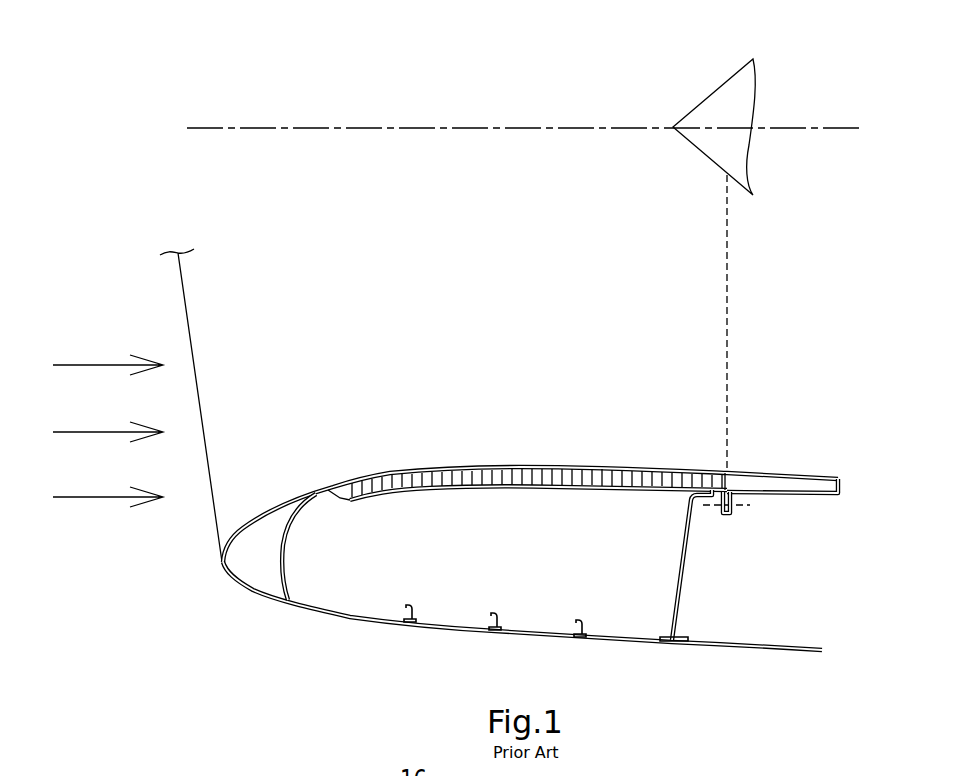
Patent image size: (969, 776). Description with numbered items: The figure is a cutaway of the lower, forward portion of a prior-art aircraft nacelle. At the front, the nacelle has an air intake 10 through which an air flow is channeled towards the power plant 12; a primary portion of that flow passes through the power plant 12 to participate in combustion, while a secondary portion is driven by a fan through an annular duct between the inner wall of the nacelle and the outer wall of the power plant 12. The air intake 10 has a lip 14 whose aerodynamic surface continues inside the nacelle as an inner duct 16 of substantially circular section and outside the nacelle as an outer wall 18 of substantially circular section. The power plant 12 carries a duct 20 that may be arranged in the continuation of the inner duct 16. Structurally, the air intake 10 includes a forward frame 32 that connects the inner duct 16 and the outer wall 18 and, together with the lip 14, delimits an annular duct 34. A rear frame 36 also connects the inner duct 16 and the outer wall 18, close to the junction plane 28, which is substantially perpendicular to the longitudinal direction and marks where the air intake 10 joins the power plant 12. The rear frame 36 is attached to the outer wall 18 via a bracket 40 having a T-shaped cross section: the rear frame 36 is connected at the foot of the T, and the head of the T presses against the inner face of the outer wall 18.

The air intake 10 is at (262, 108).
The power plant 12 is at (694, 97).
The lip 14 is at (209, 569).
The inner duct 16 is at (530, 468).
The outer wall 18 is at (470, 634).
The duct 20 is at (808, 478).
The junction plane 28 is at (740, 290).
The forward frame 32 is at (288, 565).
The annular duct 34 is at (254, 573).
The rear frame 36 is at (674, 613).
The bracket 40 is at (680, 637).